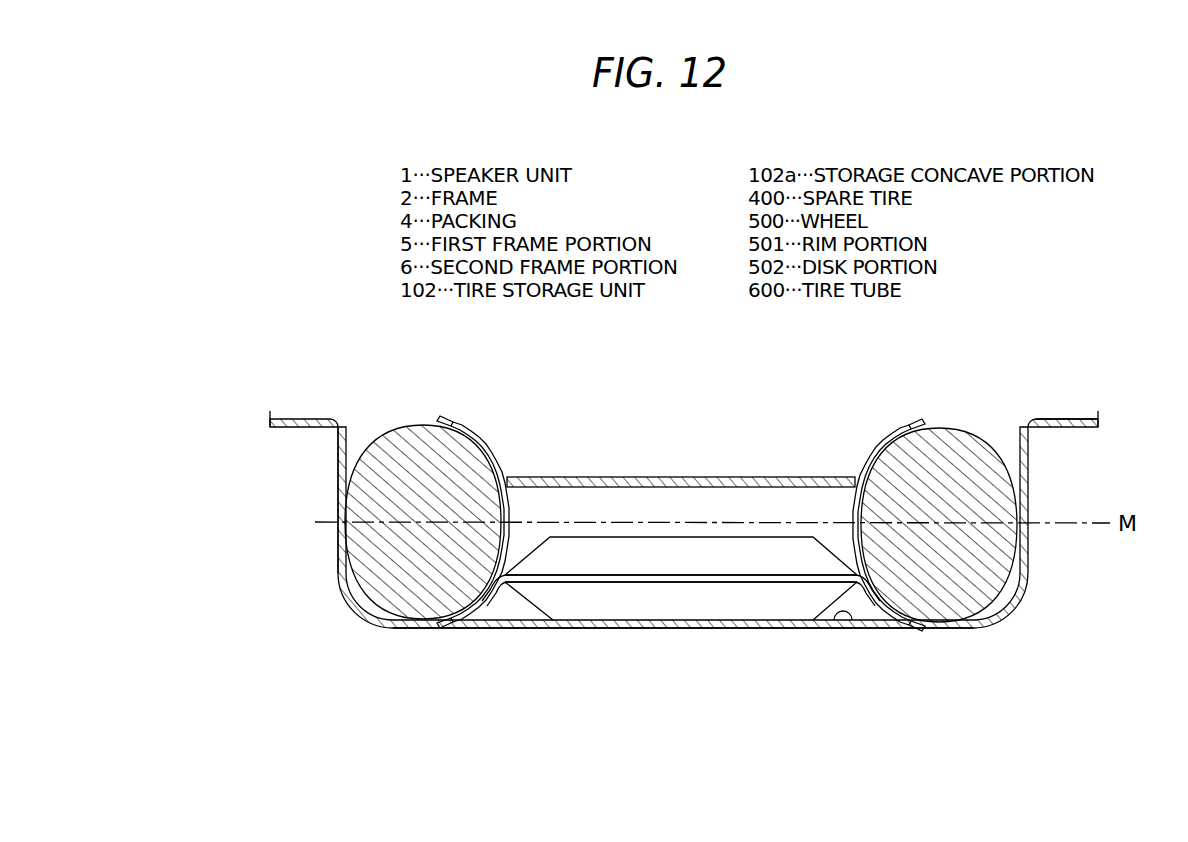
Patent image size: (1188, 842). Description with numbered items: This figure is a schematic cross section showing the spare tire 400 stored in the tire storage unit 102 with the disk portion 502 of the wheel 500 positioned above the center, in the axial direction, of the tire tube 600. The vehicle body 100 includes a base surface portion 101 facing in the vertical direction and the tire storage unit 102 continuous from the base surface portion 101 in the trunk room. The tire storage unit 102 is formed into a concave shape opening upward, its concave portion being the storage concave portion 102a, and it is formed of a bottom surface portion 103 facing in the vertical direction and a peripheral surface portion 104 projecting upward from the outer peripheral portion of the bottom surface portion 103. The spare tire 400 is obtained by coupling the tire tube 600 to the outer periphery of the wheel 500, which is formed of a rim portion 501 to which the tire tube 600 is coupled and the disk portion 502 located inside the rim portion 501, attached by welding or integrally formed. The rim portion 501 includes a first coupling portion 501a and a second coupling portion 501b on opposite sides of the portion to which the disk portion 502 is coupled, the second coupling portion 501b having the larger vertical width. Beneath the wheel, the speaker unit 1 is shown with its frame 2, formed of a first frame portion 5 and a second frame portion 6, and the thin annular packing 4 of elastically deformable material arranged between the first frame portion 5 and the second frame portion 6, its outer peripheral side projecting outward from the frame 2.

The speaker unit 1 is at (612, 612).
The frame 2 is at (776, 690).
The packing 4 is at (497, 600).
The first frame portion 5 is at (746, 558).
The second frame portion 6 is at (708, 612).
The vehicle body 100 is at (1050, 423).
The base surface portion 101 is at (1080, 420).
The tire storage unit 102 is at (1030, 505).
The storage concave portion 102a is at (842, 616).
The bottom surface portion 103 is at (510, 628).
The peripheral surface portion 104 is at (338, 500).
The spare tire 400 is at (399, 428).
The wheel 500 is at (478, 438).
The rim portion 501 is at (505, 452).
The first coupling portion 501a is at (882, 441).
The second coupling portion 501b is at (898, 626).
The disk portion 502 is at (795, 476).
The tire tube 600 is at (950, 431).